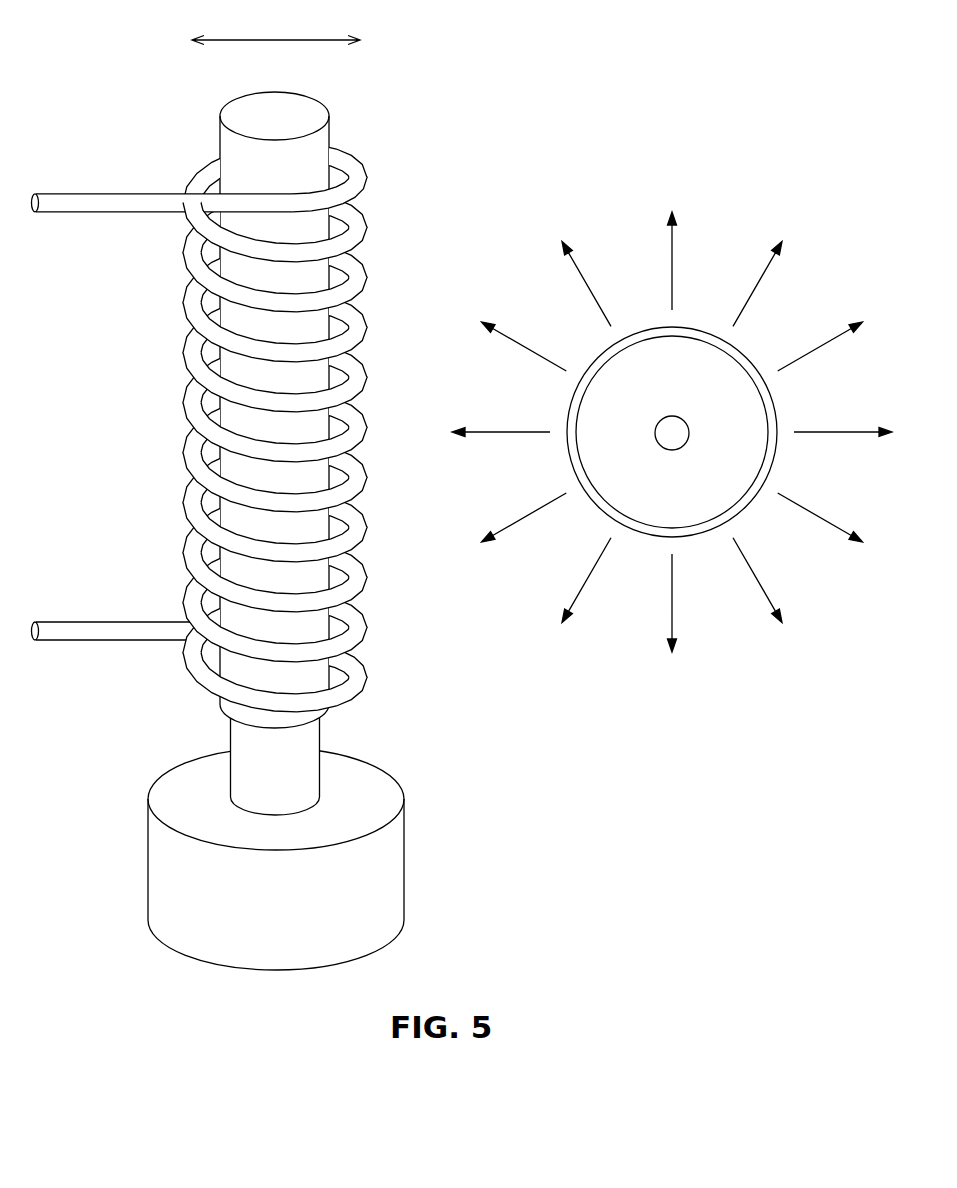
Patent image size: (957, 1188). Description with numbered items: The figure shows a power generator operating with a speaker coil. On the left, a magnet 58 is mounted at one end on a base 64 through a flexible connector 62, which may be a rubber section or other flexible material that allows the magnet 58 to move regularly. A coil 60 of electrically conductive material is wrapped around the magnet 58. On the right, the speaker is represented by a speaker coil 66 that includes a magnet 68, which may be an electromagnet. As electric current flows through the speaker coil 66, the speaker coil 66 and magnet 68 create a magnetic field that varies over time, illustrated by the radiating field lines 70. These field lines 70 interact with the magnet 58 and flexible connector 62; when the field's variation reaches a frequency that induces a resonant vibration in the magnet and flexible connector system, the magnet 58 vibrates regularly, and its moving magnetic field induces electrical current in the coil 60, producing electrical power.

The magnet 58 is at (330, 126).
The coil 60 is at (363, 166).
The flexible connector 62 is at (321, 753).
The base 64 is at (403, 855).
The speaker coil 66 is at (772, 400).
The magnet 68 is at (680, 419).
The field lines 70 is at (762, 283).